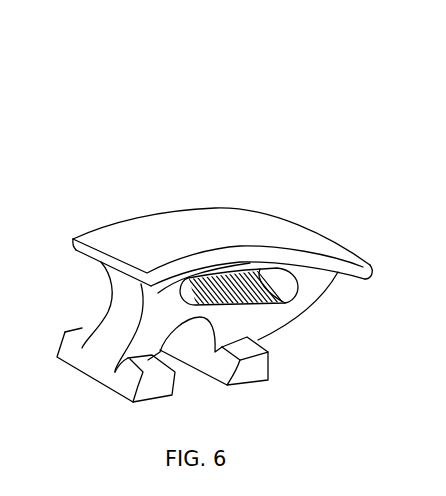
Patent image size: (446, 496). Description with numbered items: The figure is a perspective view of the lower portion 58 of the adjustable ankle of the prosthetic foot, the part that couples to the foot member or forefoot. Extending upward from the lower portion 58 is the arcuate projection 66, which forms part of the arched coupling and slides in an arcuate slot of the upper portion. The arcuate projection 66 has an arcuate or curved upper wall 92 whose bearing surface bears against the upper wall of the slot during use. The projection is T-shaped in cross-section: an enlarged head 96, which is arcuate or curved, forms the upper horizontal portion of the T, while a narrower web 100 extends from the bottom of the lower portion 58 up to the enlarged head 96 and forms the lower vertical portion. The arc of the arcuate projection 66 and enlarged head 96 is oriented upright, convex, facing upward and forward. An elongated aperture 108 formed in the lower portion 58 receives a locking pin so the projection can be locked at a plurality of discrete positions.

The lower portion 58 is at (103, 299).
The arcuate projection 66 is at (97, 224).
The upper wall 92 is at (197, 226).
The enlarged head 96 is at (167, 212).
The narrower web 100 is at (106, 311).
The elongated aperture 108 is at (293, 300).